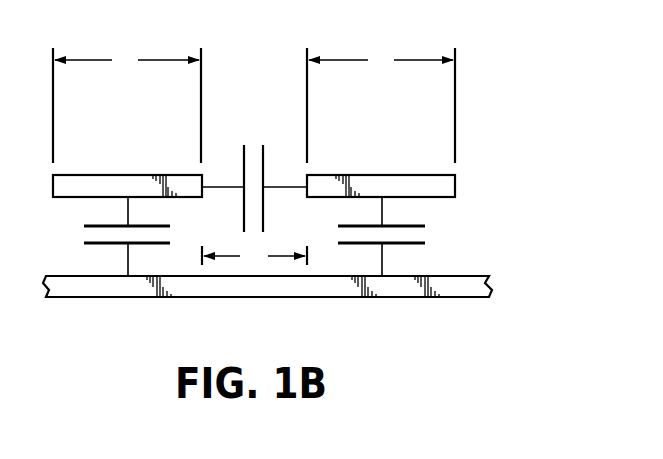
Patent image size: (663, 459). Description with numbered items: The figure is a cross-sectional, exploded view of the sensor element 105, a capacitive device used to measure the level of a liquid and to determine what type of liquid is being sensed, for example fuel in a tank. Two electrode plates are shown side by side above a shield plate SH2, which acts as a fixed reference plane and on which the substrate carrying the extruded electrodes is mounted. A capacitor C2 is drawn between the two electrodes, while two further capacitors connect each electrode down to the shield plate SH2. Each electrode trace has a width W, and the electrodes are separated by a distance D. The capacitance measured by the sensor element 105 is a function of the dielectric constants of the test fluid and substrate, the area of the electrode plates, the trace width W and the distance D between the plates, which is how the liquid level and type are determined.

The sensor element 105 is at (505, 88).
The capacitor C2 is at (254, 176).
The shield plate SH2 is at (398, 287).
The width of the trace W is at (254, 105).
The distance between plates D is at (254, 257).